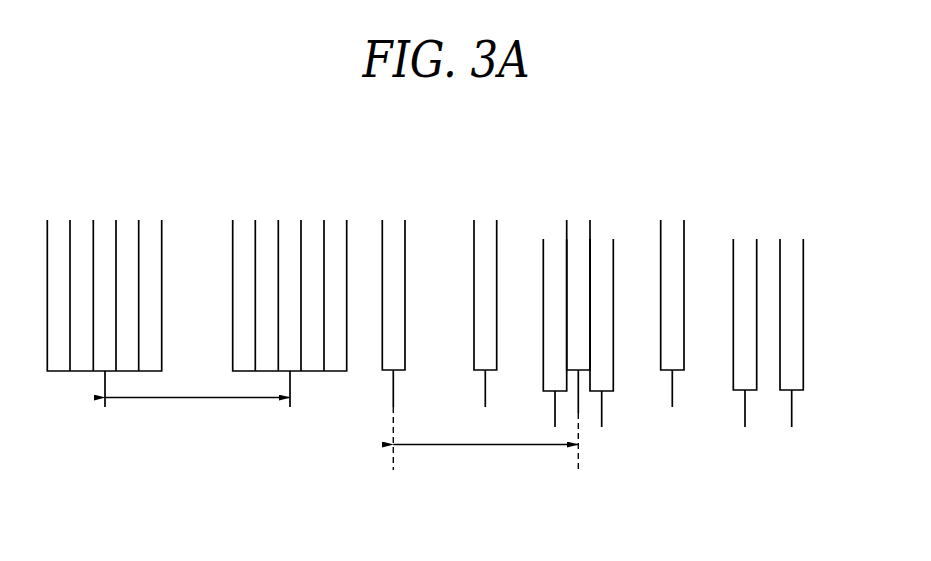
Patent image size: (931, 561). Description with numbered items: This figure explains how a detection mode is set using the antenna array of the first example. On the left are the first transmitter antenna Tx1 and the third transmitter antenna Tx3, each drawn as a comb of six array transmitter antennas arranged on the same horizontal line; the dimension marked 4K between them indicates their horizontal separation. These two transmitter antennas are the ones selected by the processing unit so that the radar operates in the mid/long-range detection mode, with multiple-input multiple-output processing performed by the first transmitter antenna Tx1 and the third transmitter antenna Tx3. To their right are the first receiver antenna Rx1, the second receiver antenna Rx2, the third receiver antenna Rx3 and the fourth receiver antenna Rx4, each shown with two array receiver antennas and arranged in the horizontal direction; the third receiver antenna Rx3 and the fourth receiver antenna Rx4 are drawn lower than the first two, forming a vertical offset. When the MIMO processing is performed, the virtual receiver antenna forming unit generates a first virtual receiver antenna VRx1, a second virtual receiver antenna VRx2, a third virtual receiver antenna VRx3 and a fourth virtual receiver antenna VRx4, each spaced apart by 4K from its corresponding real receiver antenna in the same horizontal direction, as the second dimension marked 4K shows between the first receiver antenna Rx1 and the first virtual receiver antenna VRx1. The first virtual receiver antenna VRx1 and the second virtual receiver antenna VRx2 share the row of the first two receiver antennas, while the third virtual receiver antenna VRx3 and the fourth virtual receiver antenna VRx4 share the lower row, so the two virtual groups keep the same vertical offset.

The first transmitter antenna Tx1 is at (104, 292).
The third transmitter antenna Tx3 is at (290, 292).
The first receiver antenna Rx1 is at (393, 280).
The second receiver antenna Rx2 is at (486, 280).
The third receiver antenna Rx3 is at (555, 290).
The fourth receiver antenna Rx4 is at (602, 290).
The first virtual receiver antenna VRx1 is at (577, 301).
The second virtual receiver antenna VRx2 is at (672, 298).
The third virtual receiver antenna VRx3 is at (741, 308).
The fourth virtual receiver antenna VRx4 is at (799, 308).
The horizontal interval 4K is at (341, 436).